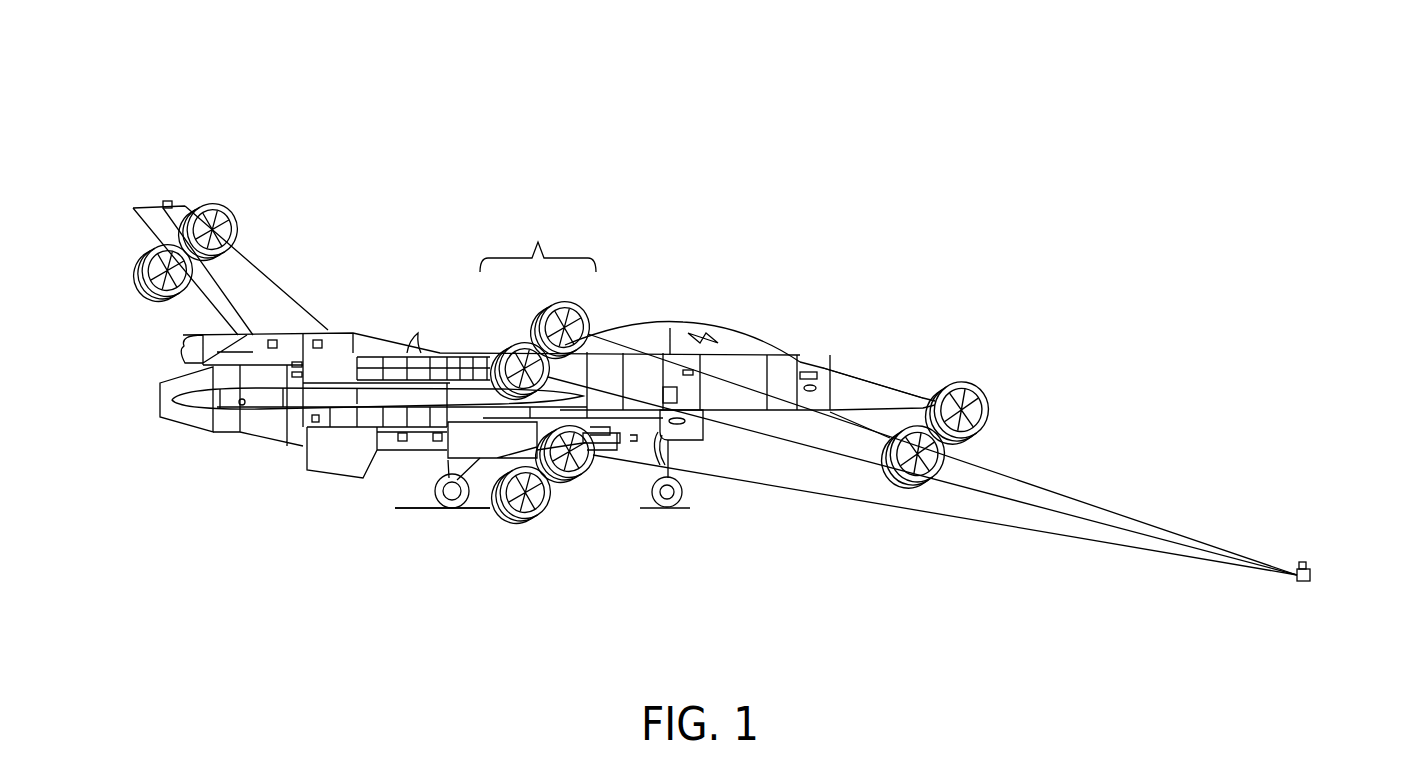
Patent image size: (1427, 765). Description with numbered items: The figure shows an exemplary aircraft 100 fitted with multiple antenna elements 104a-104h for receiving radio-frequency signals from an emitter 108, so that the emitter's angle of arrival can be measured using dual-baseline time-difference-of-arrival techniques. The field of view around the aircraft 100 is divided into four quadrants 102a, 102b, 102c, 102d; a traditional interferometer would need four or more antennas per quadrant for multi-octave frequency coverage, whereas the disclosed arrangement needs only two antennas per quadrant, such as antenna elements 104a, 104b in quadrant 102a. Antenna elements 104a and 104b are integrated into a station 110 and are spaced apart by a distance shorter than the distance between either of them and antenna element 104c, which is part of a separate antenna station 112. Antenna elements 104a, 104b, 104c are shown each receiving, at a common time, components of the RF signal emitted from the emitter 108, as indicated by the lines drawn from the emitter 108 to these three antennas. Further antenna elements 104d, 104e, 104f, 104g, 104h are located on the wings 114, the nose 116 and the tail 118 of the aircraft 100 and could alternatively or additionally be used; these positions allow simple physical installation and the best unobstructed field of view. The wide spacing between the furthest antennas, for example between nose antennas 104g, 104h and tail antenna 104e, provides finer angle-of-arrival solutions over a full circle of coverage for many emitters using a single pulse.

The aircraft 100 is at (1029, 112).
The quadrant 102a is at (541, 631).
The quadrant 102b is at (504, 178).
The quadrant 102c is at (1020, 312).
The quadrant 102d is at (97, 398).
The antenna element 104a is at (587, 303).
The antenna element 104b is at (502, 343).
The antenna element 104c is at (580, 483).
The antenna element 104d is at (527, 530).
The antenna element 104e is at (231, 216).
The antenna element 104f is at (150, 300).
The antenna element 104g is at (986, 403).
The antenna element 104h is at (920, 484).
The emitter 108 is at (1313, 575).
The station 110 is at (538, 240).
The antenna station 112 is at (471, 545).
The wings 114 is at (447, 397).
The nose 116 is at (848, 370).
The tail 118 is at (150, 204).